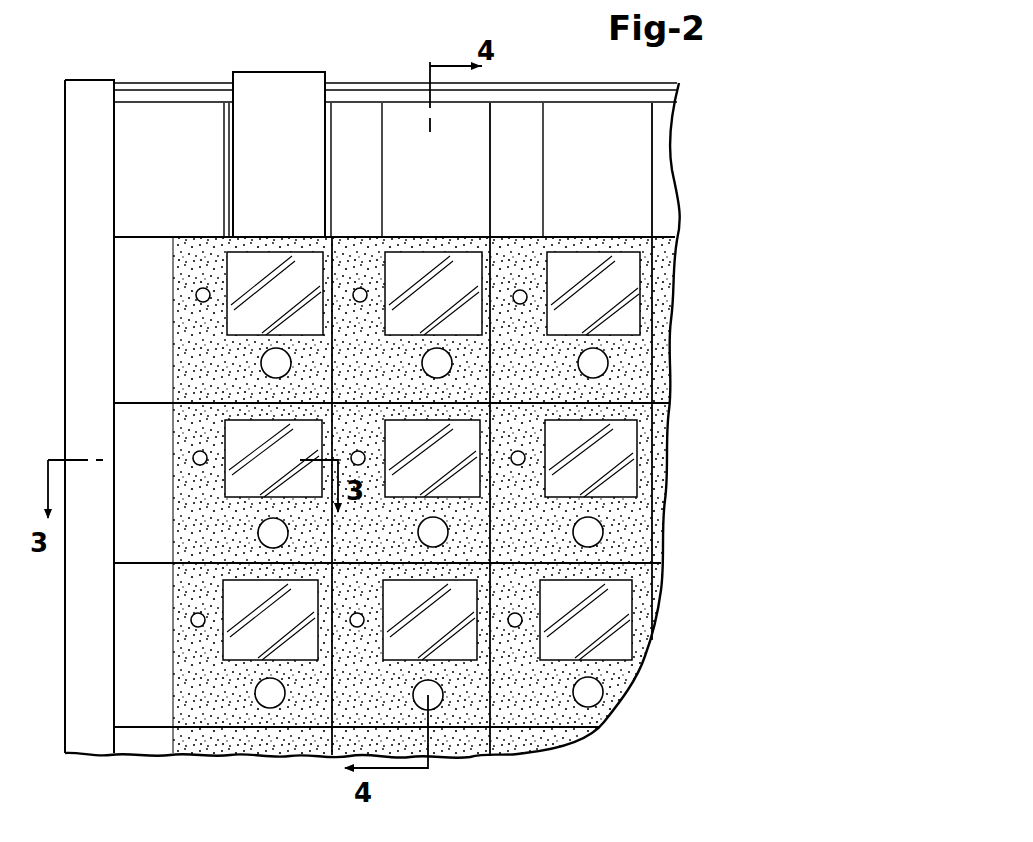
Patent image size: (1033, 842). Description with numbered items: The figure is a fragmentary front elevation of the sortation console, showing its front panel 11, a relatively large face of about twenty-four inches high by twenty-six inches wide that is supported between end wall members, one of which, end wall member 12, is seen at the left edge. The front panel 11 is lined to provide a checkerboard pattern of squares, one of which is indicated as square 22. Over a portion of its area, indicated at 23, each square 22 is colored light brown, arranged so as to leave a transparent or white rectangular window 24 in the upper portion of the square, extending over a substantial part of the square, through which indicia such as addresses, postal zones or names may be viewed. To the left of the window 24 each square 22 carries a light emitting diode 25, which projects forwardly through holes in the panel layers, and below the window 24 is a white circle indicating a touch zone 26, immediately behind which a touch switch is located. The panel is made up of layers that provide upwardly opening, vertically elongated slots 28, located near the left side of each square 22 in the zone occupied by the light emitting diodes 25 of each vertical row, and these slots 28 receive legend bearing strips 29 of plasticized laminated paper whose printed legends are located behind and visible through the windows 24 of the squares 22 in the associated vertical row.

The front panel 11 is at (681, 158).
The end wall member 12 is at (63, 735).
The square 22 is at (203, 234).
The light brown colored portion 23 is at (190, 349).
The window 24 is at (281, 264).
The light emitting diode 25 is at (196, 295).
The touch zone 26 is at (268, 370).
The slot 28 is at (224, 113).
The legend bearing strip 29 is at (326, 80).